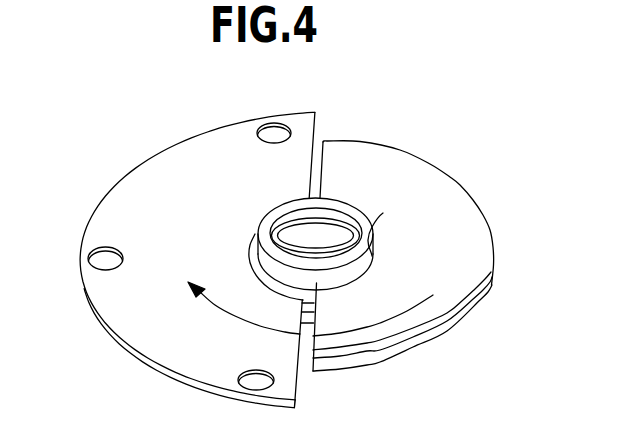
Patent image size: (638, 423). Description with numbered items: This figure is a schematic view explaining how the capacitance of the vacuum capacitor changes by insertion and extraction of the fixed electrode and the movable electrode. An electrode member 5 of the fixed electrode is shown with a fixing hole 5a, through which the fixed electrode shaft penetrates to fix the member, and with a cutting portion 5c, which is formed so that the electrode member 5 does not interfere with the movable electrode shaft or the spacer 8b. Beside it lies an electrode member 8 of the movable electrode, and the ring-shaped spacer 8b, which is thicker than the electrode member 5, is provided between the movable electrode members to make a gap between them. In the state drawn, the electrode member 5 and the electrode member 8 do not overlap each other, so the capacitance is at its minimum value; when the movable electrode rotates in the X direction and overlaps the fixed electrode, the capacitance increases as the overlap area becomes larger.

The electrode member 5 is at (168, 170).
The fixing hole 5a is at (274, 133).
The cutting portion 5c is at (249, 250).
The electrode member 8 is at (403, 162).
The spacer 8b is at (383, 213).
The X direction X is at (377, 326).